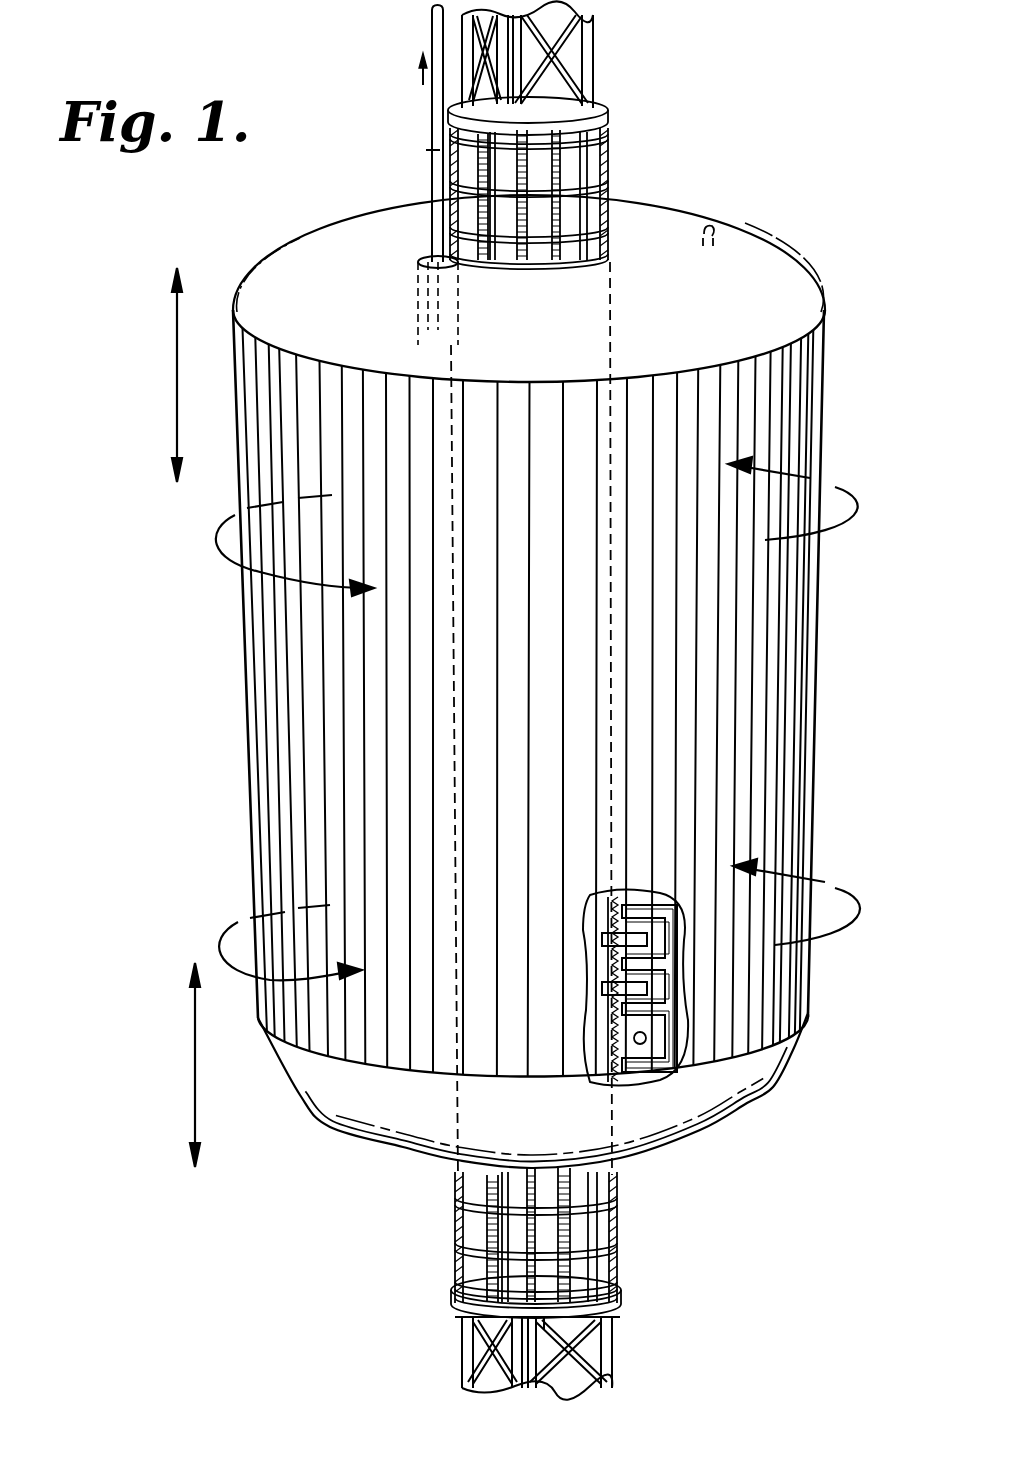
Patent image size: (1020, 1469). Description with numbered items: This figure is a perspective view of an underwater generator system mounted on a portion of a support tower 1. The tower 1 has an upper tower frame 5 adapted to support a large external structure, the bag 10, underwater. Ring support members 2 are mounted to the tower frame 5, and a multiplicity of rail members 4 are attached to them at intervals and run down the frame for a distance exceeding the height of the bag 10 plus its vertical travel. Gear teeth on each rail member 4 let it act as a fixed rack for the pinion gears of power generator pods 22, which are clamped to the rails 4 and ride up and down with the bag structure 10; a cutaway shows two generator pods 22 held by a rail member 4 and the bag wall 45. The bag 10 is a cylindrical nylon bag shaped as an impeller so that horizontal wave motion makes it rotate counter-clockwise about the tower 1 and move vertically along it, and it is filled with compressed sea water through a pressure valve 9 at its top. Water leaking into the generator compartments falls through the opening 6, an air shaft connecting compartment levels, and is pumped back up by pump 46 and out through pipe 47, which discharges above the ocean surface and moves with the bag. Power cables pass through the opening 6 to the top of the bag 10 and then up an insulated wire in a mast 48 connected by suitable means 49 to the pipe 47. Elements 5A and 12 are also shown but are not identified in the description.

The support tower 1 is at (595, 62).
The ring support members 2 is at (592, 176).
The rail members 4 is at (604, 232).
The tower frame 5 is at (594, 30).
The tube 5A is at (422, 296).
The opening 6 is at (310, 234).
The pressure valve 9 is at (712, 228).
The bag 10 is at (270, 712).
The bottom dish 12 is at (356, 1098).
The power generator pods 22 is at (604, 939).
The bag wall 45 is at (640, 920).
The pump 46 is at (646, 1042).
The pipe 47 is at (432, 32).
The mast 48 is at (432, 100).
The connecting means 49 is at (432, 150).